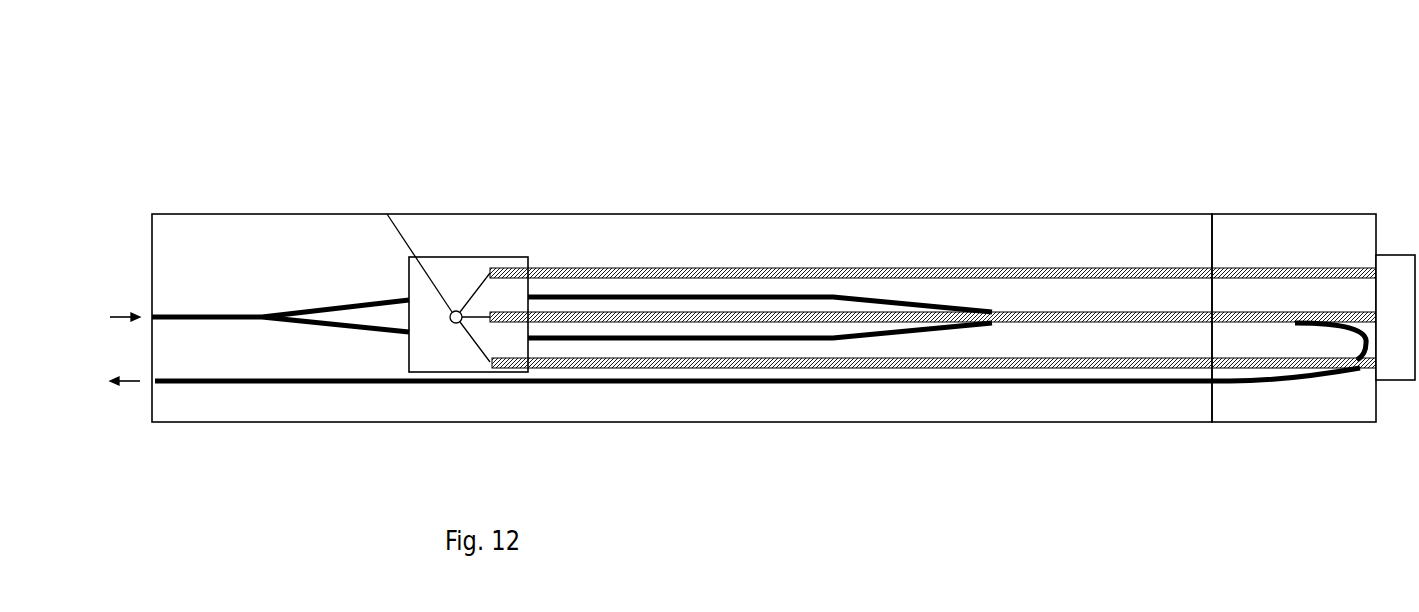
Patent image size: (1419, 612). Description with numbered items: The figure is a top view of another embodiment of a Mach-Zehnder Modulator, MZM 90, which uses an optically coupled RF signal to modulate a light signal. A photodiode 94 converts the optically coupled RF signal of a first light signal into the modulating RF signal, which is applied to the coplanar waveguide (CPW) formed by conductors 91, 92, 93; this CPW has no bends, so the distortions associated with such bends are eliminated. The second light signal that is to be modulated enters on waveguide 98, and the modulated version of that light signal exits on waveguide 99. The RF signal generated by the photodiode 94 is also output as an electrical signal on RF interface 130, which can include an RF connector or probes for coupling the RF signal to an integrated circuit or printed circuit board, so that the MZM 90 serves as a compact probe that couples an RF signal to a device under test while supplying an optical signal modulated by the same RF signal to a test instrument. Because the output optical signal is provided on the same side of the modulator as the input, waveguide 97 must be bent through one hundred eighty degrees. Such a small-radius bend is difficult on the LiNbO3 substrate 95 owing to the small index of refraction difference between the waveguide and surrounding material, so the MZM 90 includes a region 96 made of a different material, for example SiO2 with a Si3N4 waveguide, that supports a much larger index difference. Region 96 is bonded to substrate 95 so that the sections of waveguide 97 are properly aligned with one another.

The Mach-Zehnder Modulator 90 is at (350, 97).
The conductor 91 is at (1072, 270).
The conductor 92 is at (873, 310).
The conductor 93 is at (1057, 364).
The photodiode 94 is at (457, 287).
The LiNbO3 substrate 95 is at (333, 262).
The region 96 is at (1293, 258).
The waveguide 97 is at (1138, 317).
The waveguide 98 is at (201, 314).
The waveguide 99 is at (187, 377).
The RF interface 130 is at (1392, 380).